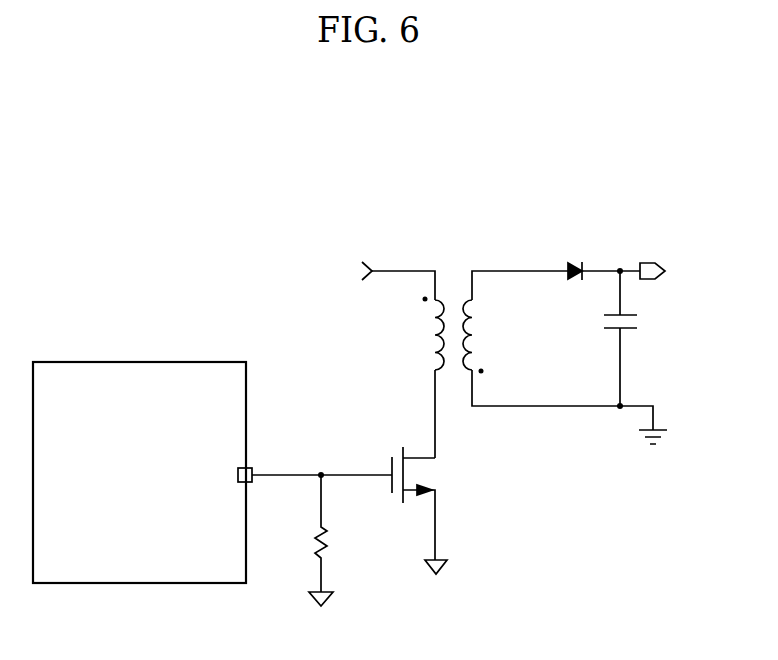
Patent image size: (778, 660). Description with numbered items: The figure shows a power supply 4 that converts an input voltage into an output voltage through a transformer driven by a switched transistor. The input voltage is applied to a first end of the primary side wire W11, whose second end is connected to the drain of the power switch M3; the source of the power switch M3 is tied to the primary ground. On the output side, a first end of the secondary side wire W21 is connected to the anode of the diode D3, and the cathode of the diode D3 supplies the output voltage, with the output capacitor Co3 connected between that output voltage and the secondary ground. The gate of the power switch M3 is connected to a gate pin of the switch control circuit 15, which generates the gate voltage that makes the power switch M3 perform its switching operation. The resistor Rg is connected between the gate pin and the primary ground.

The power supply 4 is at (152, 260).
The switch control circuit 15 is at (197, 362).
The primary side wire W11 is at (415, 334).
The secondary side wire W21 is at (494, 337).
The diode D3 is at (577, 256).
The output capacitor Co3 is at (642, 338).
The power switch M3 is at (430, 510).
The resistor Rg is at (332, 540).